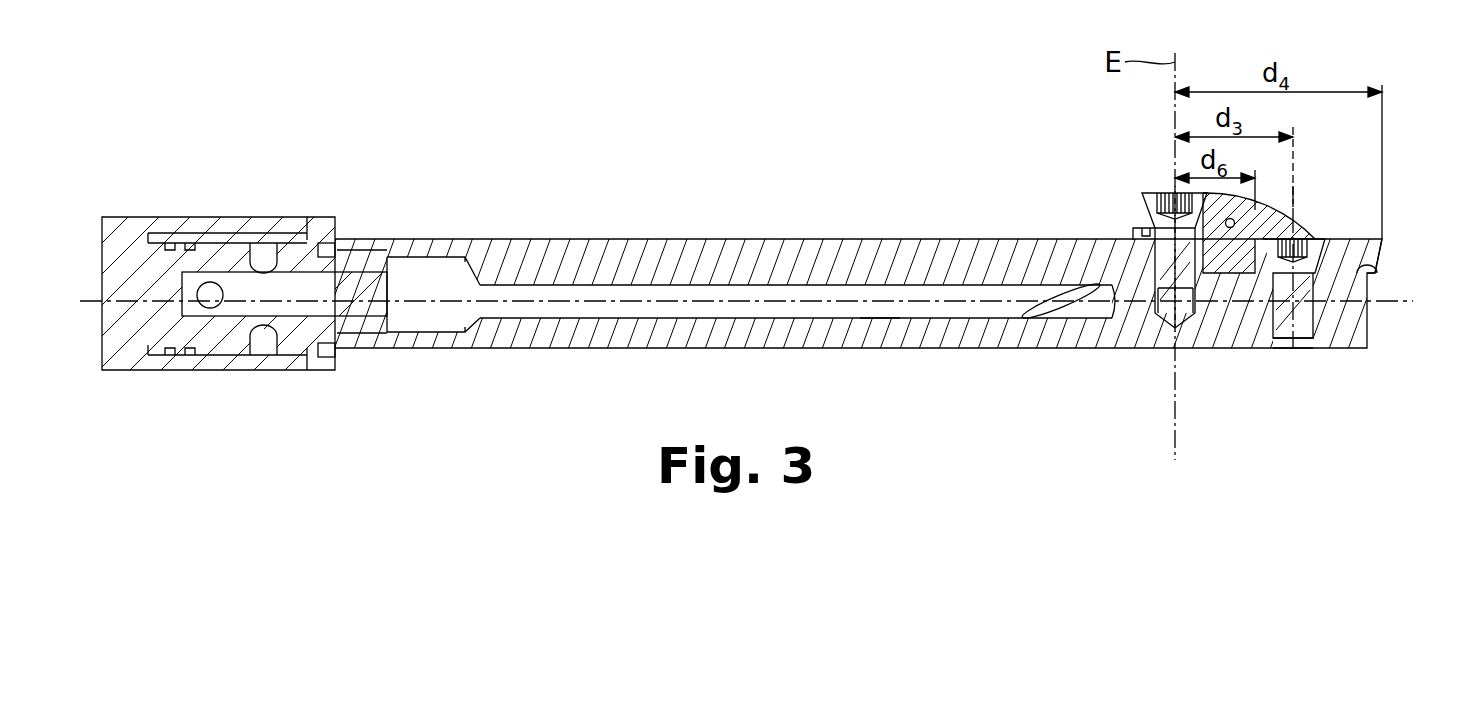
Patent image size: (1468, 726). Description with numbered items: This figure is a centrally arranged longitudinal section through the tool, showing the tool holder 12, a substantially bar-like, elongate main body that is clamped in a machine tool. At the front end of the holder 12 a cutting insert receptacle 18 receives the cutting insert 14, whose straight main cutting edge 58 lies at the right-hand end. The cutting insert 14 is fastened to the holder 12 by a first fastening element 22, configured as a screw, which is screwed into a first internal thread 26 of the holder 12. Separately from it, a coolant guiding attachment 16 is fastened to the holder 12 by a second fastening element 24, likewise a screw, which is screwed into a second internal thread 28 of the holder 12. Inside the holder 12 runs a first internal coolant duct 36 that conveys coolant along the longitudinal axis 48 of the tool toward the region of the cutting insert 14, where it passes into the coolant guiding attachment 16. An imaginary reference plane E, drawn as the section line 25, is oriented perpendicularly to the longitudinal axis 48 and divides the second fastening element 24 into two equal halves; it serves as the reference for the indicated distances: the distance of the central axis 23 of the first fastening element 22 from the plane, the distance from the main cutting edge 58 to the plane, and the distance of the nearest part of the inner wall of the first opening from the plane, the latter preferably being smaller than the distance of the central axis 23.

The tool holder 12 is at (557, 336).
The longitudinal axis 48 is at (793, 302).
The first internal coolant duct 36 is at (878, 319).
The second internal thread 28 is at (1154, 300).
The coolant guiding attachment 16 is at (1142, 212).
The second fastening element 24 is at (1180, 324).
The cutting insert 14 is at (1243, 275).
The first fastening element 22 is at (1297, 340).
The first internal thread 26 is at (1333, 349).
The cutting insert receptacle 18 is at (1379, 274).
The main cutting edge 58 is at (1383, 240).
The central axis 23 is at (1295, 175).
The plane E line 25 is at (1175, 450).